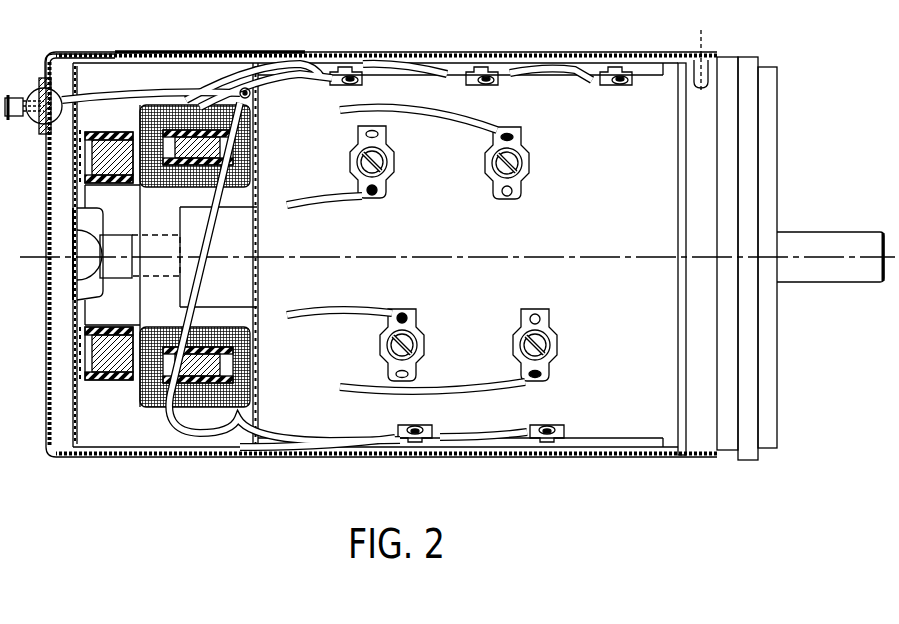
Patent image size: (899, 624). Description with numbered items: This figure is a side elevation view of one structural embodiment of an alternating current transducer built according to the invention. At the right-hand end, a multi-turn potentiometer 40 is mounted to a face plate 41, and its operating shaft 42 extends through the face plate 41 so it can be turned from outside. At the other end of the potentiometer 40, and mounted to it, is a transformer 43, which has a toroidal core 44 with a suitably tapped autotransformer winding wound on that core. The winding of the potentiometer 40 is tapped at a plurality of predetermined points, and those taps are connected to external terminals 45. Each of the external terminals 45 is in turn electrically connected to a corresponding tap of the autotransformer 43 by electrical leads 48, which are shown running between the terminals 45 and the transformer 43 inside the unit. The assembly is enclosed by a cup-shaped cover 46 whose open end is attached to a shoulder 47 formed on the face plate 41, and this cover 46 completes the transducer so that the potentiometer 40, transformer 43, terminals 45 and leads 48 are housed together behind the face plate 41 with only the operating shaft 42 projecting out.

The multi-turn potentiometer 40 is at (642, 100).
The face plate 41 is at (777, 140).
The operating shaft 42 is at (848, 232).
The transformer 43 is at (140, 123).
The toroidal core 44 is at (200, 334).
The external terminals 45 is at (547, 358).
The cup-shaped cover 46 is at (388, 53).
The shoulder 47 is at (703, 460).
The electrical leads 48 is at (296, 428).